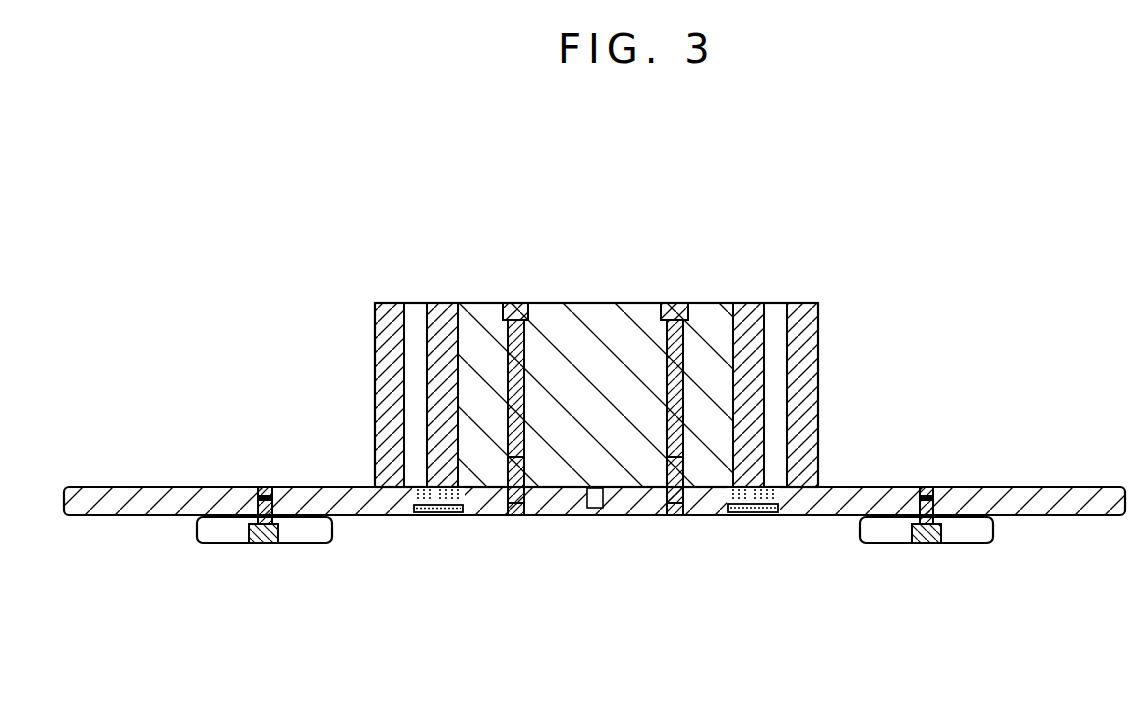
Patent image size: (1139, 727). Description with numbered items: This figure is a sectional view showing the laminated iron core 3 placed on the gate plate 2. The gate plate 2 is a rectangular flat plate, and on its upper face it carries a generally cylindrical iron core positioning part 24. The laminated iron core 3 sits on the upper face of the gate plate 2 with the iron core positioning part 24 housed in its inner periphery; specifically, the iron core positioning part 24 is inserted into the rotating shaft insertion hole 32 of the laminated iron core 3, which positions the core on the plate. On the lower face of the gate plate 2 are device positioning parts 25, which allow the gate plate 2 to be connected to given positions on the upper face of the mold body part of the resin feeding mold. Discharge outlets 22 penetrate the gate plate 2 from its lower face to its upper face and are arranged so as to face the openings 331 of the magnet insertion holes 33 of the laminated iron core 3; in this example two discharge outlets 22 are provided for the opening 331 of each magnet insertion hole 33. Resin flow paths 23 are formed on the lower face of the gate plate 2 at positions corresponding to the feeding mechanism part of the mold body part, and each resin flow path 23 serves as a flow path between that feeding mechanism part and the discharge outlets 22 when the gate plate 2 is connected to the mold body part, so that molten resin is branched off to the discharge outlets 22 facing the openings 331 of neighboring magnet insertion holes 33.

The gate plate 2 is at (163, 176).
The laminated iron core 3 is at (385, 357).
The discharge outlet 22 is at (410, 503).
The resin flow path 23 is at (428, 520).
The iron core positioning part 24 is at (580, 334).
The device positioning part 25 is at (230, 533).
The rotating shaft insertion hole 32 is at (732, 338).
The magnet insertion hole 33 is at (415, 332).
The opening 331 is at (413, 492).